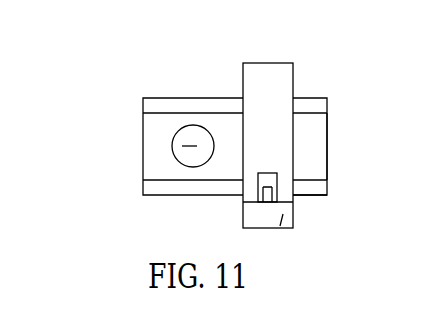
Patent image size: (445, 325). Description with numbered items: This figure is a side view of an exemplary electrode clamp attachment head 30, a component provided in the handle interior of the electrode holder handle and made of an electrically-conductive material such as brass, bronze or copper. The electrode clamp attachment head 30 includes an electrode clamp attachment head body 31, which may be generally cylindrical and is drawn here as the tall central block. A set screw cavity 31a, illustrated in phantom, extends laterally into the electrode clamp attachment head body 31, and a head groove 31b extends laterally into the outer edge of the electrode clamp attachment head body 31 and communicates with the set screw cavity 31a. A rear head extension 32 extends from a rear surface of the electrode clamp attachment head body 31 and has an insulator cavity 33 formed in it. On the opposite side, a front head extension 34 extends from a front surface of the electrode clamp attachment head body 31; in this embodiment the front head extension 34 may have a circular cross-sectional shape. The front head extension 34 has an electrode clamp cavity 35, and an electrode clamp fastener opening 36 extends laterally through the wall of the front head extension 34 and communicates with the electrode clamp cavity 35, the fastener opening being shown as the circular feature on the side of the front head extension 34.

The electrode clamp attachment head 30 is at (310, 96).
The electrode clamp attachment head body 31 is at (272, 75).
The set screw cavity 31a is at (240, 208).
The head groove 31b is at (283, 229).
The rear head extension 32 is at (322, 196).
The insulator cavity 33 is at (313, 178).
The front head extension 34 is at (183, 98).
The electrode clamp cavity 35 is at (168, 113).
The electrode clamp fastener opening 36 is at (175, 158).